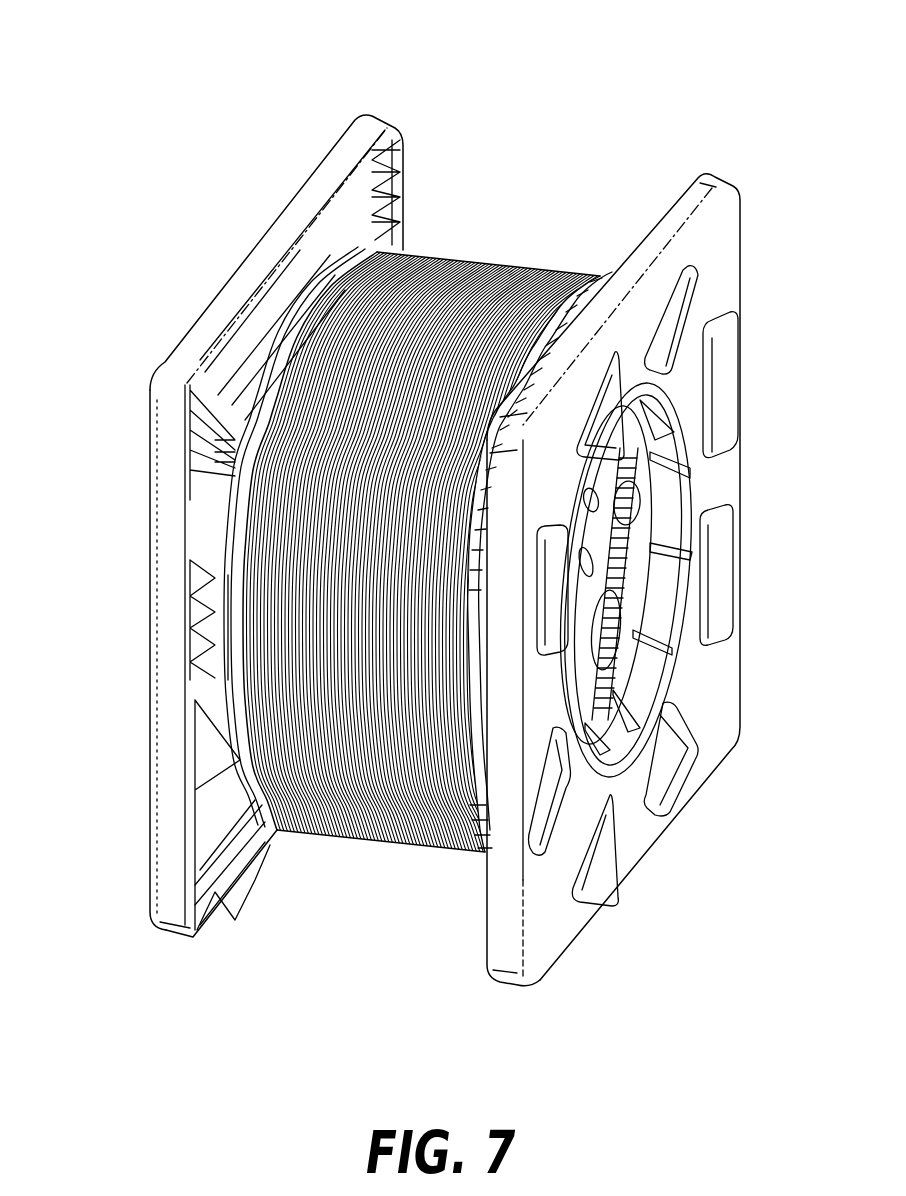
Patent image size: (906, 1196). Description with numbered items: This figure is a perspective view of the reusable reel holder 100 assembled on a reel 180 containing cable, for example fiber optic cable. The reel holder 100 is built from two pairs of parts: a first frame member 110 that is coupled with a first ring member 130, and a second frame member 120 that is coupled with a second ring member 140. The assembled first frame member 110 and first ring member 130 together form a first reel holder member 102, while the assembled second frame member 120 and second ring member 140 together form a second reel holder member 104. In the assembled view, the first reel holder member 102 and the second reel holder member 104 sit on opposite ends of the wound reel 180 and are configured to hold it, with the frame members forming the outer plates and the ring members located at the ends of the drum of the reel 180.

The reel holder 100 is at (122, 219).
The first reel holder member 102 is at (514, 1012).
The second reel holder member 104 is at (184, 950).
The first frame member 110 is at (727, 178).
The second frame member 120 is at (376, 117).
The first ring member 130 is at (457, 857).
The second ring member 140 is at (275, 828).
The reel 180 is at (502, 258).